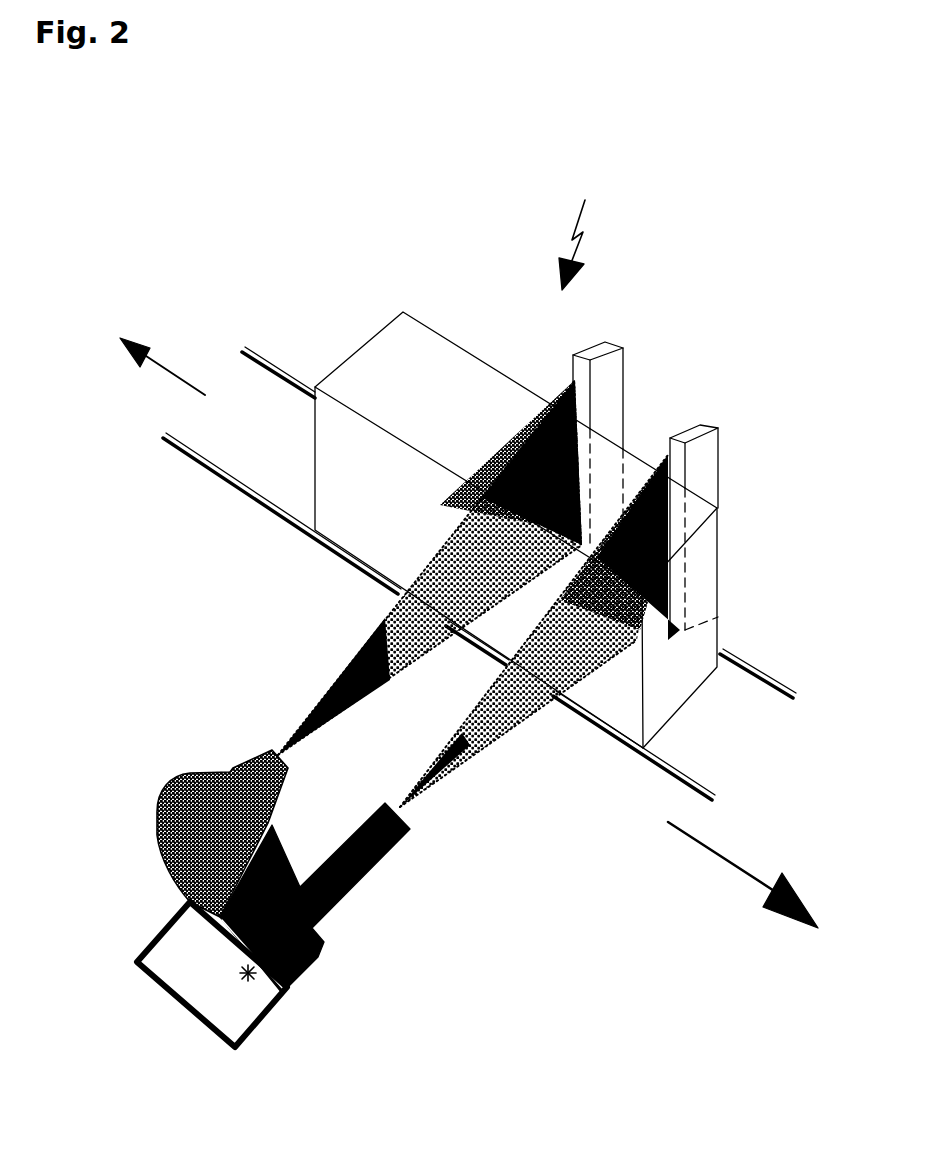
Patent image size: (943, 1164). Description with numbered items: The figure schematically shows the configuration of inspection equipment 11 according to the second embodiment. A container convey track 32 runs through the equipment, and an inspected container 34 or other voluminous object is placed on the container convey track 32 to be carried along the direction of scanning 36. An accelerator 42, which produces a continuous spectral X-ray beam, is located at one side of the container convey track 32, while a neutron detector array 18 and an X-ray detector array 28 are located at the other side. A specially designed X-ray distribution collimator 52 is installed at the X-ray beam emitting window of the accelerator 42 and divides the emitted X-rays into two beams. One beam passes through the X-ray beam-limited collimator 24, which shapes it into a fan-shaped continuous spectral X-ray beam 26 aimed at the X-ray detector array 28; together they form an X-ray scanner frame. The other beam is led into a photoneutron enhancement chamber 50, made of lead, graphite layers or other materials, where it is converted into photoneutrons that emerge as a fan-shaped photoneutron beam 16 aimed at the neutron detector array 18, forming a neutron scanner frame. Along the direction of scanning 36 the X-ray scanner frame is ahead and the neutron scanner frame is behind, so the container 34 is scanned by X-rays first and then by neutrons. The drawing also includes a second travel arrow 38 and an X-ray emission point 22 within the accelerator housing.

The equipment 11 is at (569, 228).
The fan-shaped photoneutron beam 16 is at (362, 650).
The neutron detector array 18 is at (608, 392).
The light source 22 is at (252, 985).
The X-ray beam-limited collimator 24 is at (387, 848).
The fan-shaped continuous spectral X-ray beam 26 is at (458, 767).
The X-ray detector array 28 is at (708, 460).
The container convey track 32 is at (213, 475).
The inspected container 34 is at (377, 355).
The direction of scanning 36 is at (739, 892).
The direction of travel arrow 38 is at (167, 367).
The accelerator 42 is at (187, 974).
The photoneutron enhancement chamber 50 is at (188, 803).
The X-ray distribution collimator 52 is at (308, 967).